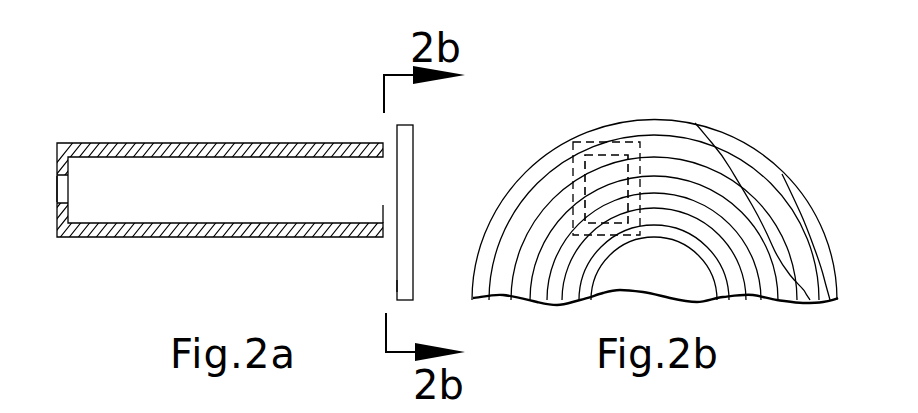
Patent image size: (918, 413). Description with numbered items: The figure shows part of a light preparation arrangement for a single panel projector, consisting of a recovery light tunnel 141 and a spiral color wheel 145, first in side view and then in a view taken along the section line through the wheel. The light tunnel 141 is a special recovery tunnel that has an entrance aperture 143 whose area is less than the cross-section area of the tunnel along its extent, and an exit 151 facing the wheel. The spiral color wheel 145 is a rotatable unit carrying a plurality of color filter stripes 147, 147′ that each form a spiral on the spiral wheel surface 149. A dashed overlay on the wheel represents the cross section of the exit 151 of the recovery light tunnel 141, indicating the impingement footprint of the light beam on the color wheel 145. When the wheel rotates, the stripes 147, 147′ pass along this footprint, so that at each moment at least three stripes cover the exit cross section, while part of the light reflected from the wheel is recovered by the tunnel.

In FIG. 2a, the light tunnel 141 is at (138, 143).
In FIG. 2a, the entrance aperture 143 is at (60, 189).
In FIG. 2a, the spiral color wheel 145 is at (415, 143).
In FIG. 2b, the spiral color wheel 145 is at (758, 140).
In FIG. 2b, the color filter stripe 147 is at (483, 273).
In FIG. 2b, the color filter stripe 147′ is at (507, 212).
In FIG. 2a, the spiral wheel surface 149 is at (400, 286).
In FIG. 2a, the exit 151 is at (392, 207).
In FIG. 2b, the exit 151 is at (614, 140).